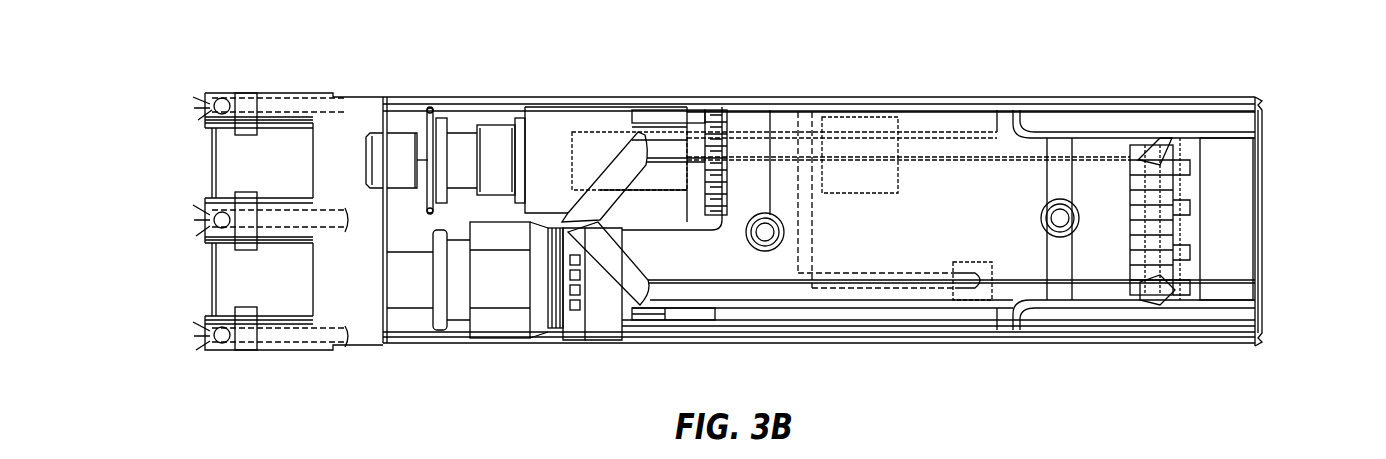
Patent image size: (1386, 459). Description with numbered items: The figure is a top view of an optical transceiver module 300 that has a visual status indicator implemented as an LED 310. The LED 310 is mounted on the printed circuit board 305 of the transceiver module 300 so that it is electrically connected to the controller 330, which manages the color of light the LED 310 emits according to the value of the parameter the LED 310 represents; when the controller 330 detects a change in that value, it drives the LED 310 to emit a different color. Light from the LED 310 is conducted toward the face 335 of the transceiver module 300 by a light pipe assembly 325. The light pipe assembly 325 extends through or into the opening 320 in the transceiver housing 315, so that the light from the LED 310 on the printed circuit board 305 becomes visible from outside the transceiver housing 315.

The optical transceiver module 300 is at (588, 78).
The printed circuit board 305 is at (1216, 216).
The LED 310 is at (976, 304).
The transceiver housing 315 is at (907, 347).
The opening 320 is at (199, 100).
The light pipe assembly 325 is at (863, 287).
The controller 330 is at (866, 104).
The face 335 is at (373, 161).